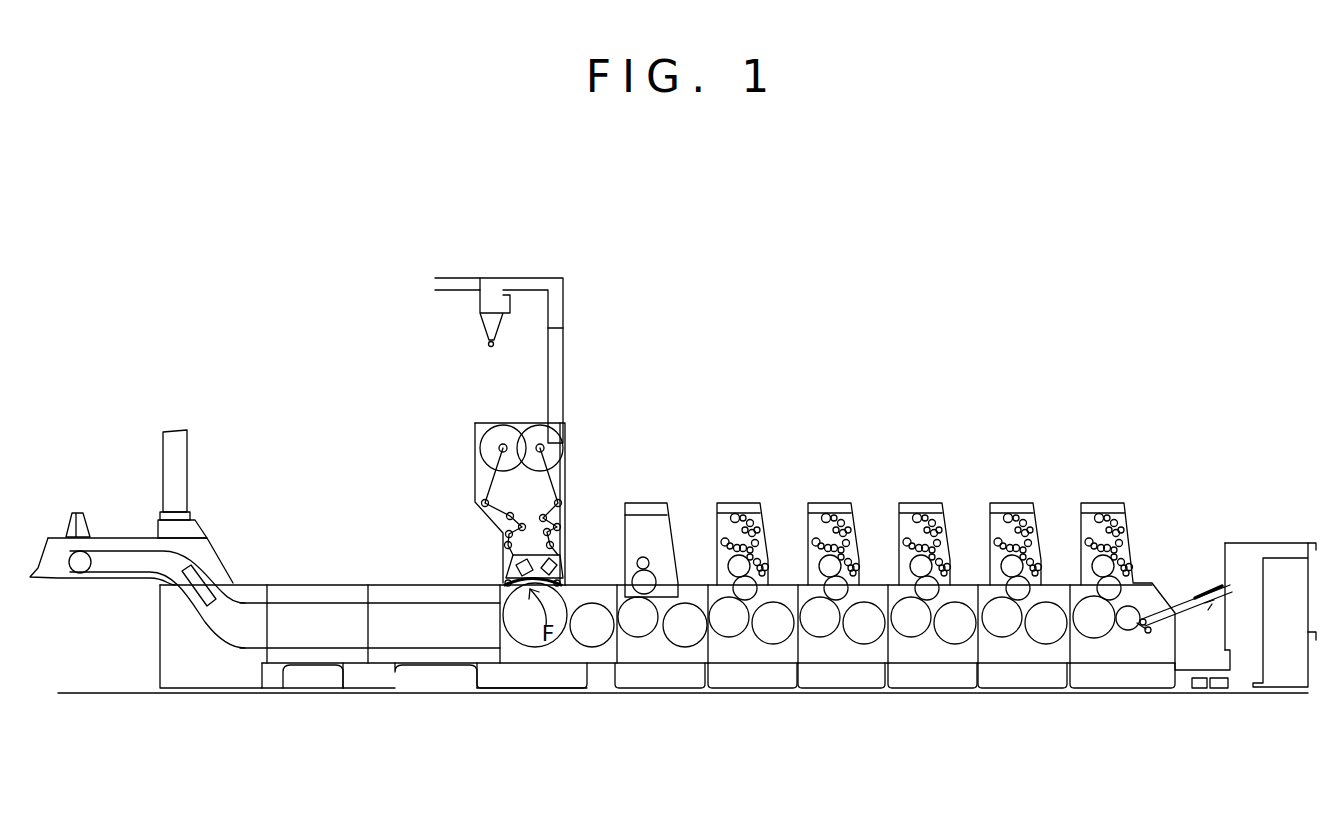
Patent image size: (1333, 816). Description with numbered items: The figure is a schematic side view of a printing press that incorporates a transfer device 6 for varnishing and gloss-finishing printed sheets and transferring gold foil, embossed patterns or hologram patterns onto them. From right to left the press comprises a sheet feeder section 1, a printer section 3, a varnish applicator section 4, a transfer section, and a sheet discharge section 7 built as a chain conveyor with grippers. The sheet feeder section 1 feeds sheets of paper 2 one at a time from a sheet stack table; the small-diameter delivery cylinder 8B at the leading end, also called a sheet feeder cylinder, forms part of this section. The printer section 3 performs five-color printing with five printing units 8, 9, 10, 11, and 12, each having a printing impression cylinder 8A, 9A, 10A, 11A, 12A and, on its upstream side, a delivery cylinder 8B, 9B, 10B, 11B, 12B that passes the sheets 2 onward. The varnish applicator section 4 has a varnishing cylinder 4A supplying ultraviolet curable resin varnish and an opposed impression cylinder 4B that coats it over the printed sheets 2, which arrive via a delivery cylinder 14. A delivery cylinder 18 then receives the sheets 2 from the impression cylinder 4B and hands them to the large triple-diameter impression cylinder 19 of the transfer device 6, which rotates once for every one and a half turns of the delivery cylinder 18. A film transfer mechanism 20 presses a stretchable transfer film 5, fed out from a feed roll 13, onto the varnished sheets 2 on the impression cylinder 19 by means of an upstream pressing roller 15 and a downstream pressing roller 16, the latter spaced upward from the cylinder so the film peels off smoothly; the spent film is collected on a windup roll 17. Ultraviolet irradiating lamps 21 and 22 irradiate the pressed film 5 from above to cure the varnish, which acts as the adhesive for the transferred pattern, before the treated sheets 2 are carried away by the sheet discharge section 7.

The sheet feeder section 1 is at (1218, 470).
The sheets of paper 2 is at (1208, 582).
The printer section 3 is at (1022, 393).
The varnish applicator section 4 is at (655, 492).
The varnishing cylinder 4A is at (647, 575).
The impression cylinder 4B is at (637, 632).
The transfer film 5 is at (562, 472).
The transfer device 6 is at (440, 410).
The sheet discharge section 7 is at (390, 595).
The printing unit 8 is at (1106, 490).
The printing impression cylinder 8A is at (1092, 632).
The delivery cylinder 8B is at (1127, 628).
The printing unit 9 is at (1016, 490).
The printing impression cylinder 9A is at (1000, 632).
The delivery cylinder 9B is at (1044, 640).
The printing unit 10 is at (925, 492).
The printing impression cylinder 10A is at (909, 632).
The delivery cylinder 10B is at (953, 640).
The printing unit 11 is at (835, 492).
The printing impression cylinder 11A is at (818, 632).
The delivery cylinder 11B is at (862, 640).
The printing unit 12 is at (745, 492).
The printing impression cylinder 12A is at (727, 632).
The delivery cylinder 12B is at (771, 640).
The feed roll 13 is at (538, 444).
The delivery cylinder 14 is at (685, 640).
The pressing roller 15 is at (562, 576).
The pressing roller 16 is at (505, 568).
The windup roll 17 is at (500, 448).
The delivery cylinder 18 is at (590, 640).
The impression cylinder 19 is at (530, 640).
The film transfer mechanism 20 is at (478, 480).
The ultraviolet irradiating lamp 21 is at (552, 545).
The ultraviolet irradiating lamp 22 is at (505, 545).